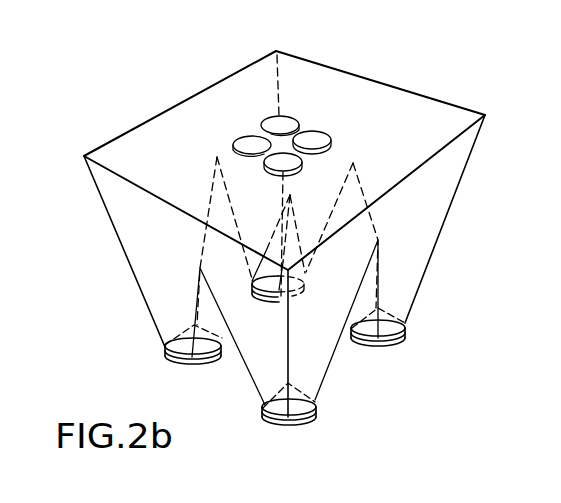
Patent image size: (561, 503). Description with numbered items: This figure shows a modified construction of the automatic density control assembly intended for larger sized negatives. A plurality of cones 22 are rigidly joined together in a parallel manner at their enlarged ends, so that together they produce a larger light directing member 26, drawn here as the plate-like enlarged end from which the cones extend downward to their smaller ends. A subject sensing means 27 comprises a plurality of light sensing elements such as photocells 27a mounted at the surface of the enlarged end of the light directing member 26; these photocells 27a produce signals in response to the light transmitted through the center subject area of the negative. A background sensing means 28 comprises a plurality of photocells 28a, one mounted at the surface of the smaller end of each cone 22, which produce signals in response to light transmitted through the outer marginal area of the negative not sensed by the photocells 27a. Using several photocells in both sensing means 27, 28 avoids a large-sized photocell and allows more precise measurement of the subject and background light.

The cone 22 is at (163, 308).
The light directing member 26 is at (108, 240).
The subject sensing means 27 is at (303, 118).
The photocell 27a is at (263, 168).
The background sensing means 28 is at (348, 368).
The photocell 28a is at (186, 364).